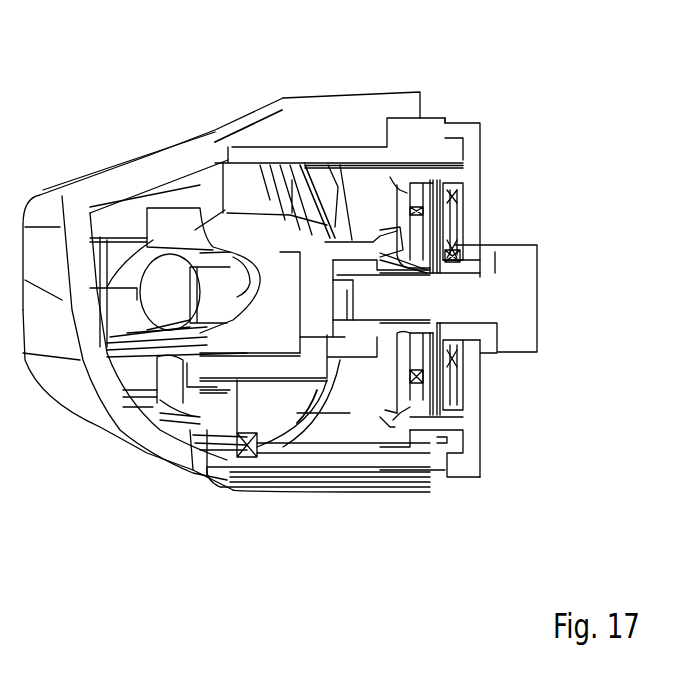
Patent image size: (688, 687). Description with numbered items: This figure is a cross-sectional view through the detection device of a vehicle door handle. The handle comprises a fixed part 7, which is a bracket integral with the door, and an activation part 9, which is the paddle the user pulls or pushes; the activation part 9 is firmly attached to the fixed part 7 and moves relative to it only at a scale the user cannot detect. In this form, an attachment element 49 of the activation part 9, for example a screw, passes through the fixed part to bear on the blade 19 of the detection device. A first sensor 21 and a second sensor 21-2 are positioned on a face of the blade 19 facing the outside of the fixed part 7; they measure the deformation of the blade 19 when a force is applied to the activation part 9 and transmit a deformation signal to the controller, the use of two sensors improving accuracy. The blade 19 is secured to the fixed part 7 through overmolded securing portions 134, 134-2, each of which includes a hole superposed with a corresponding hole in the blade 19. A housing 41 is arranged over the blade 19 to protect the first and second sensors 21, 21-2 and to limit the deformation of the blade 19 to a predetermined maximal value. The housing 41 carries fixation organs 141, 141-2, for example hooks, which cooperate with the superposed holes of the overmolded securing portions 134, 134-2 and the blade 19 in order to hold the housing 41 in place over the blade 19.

The fixed part 7 is at (273, 460).
The activation part 9 is at (143, 430).
The blade 19 is at (452, 255).
The first sensor 21 is at (450, 222).
The second sensor 21-2 is at (447, 387).
The housing 41 is at (477, 378).
The attachment element 49 is at (515, 312).
The overmolded securing portion 134 is at (455, 152).
The overmolded securing portion 134-2 is at (452, 447).
The fixation organ 141 is at (407, 178).
The fixation organ 141-2 is at (407, 422).